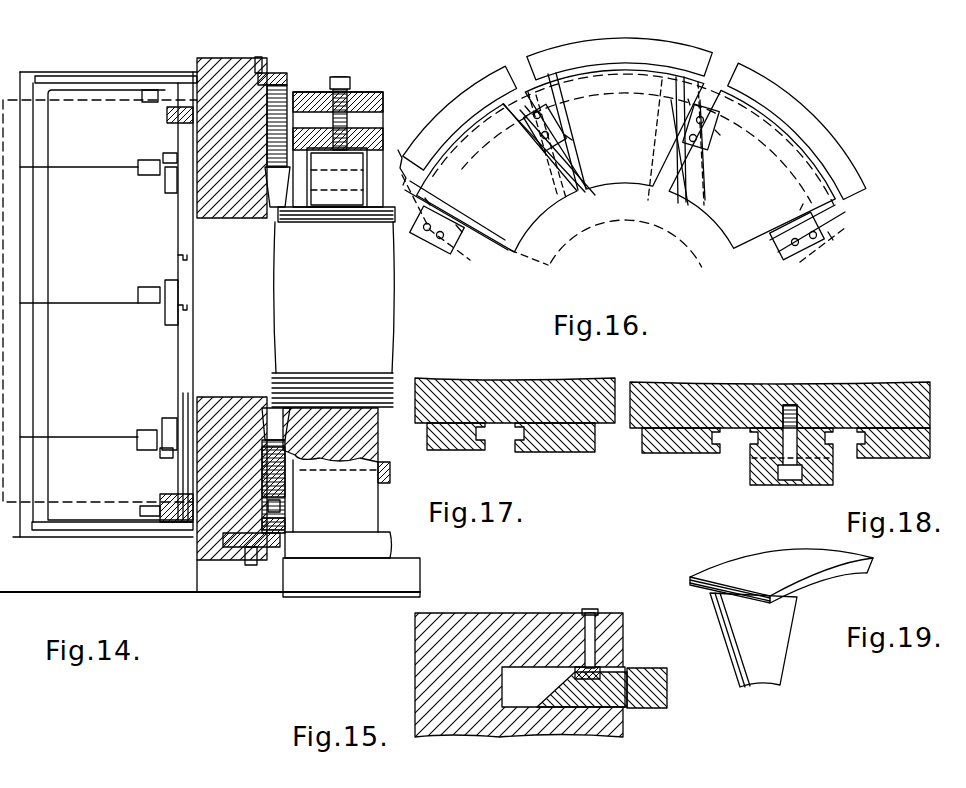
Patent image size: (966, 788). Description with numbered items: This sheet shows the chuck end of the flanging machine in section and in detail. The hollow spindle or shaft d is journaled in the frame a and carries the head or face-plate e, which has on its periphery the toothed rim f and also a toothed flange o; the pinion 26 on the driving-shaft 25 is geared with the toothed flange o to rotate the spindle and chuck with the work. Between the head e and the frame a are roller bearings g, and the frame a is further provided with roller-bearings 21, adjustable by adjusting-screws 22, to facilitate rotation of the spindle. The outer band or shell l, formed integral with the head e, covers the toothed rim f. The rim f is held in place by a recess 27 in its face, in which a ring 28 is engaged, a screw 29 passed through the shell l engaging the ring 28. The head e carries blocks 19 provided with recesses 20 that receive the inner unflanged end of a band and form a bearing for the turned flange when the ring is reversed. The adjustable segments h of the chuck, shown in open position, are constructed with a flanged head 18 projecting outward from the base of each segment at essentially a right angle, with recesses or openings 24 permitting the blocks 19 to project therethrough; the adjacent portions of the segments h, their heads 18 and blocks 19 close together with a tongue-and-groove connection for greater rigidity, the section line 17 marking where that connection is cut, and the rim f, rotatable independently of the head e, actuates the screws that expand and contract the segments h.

In FIG. 16, the cover strip 17 is at (660, 172).
In FIG. 14, the flanged head 18 is at (180, 222).
In FIG. 16, the flanged head 18 is at (668, 118).
In FIG. 19, the flanged head 18 is at (753, 640).
In FIG. 14, the blocks 19 is at (167, 112).
In FIG. 16, the blocks 19 is at (452, 245).
In FIG. 18, the blocks 19 is at (752, 476).
In FIG. 14, the recesses 20 is at (172, 100).
In FIG. 16, the recesses 20 is at (427, 232).
In FIG. 14, the roller-bearings 21 is at (337, 177).
In FIG. 14, the adjusting-screws 22 is at (338, 133).
In FIG. 14, the recesses or openings 24 is at (250, 562).
In FIG. 16, the recesses or openings 24 is at (448, 210).
In FIG. 19, the recesses or openings 24 is at (710, 608).
In FIG. 14, the driving-shaft 25 is at (390, 472).
In FIG. 14, the pinion 26 is at (285, 470).
In FIG. 14, the recess 27 is at (272, 548).
In FIG. 15, the recess 27 is at (628, 670).
In FIG. 15, the ring 28 is at (570, 675).
In FIG. 15, the screw 29 is at (598, 614).
In FIG. 14, the segments h is at (100, 293).
In FIG. 16, the segments h is at (614, 52).
In FIG. 17, the segments h is at (511, 451).
In FIG. 18, the segments h is at (786, 453).
In FIG. 19, the segments h is at (781, 576).
In FIG. 14, the head or face-plate e is at (205, 425).
In FIG. 17, the head or face-plate e is at (562, 392).
In FIG. 18, the head or face-plate e is at (758, 393).
In FIG. 15, the head or face-plate e is at (430, 663).
In FIG. 14, the hollow spindle or shaft d is at (333, 307).
In FIG. 14, the frame a is at (351, 502).
In FIG. 14, the roller bearings g is at (283, 195).
In FIG. 14, the toothed rim f is at (283, 540).
In FIG. 15, the toothed rim f is at (645, 710).
In FIG. 14, the outer band or shell l is at (195, 562).
In FIG. 15, the outer band or shell l is at (540, 614).
In FIG. 14, the toothed flange o is at (280, 505).